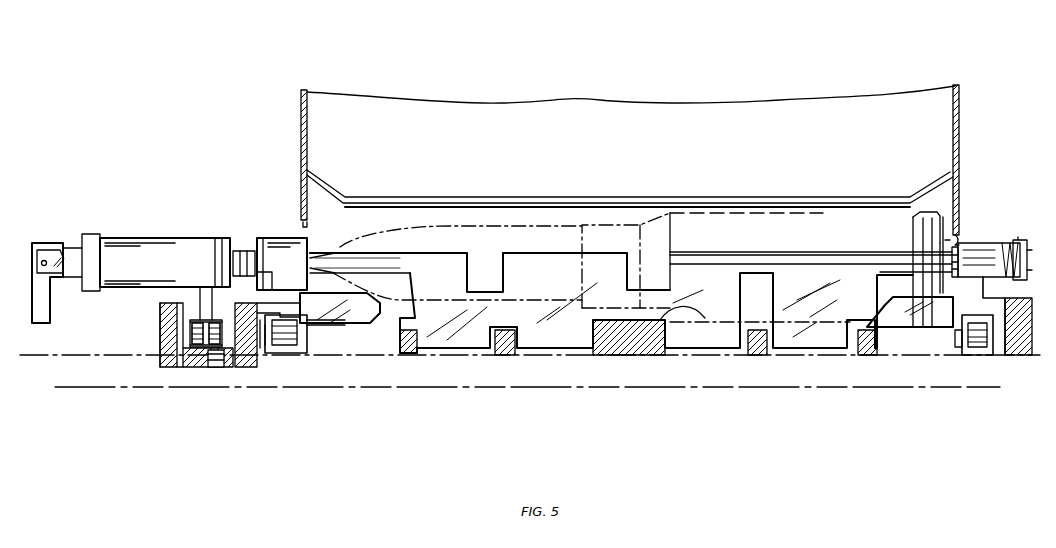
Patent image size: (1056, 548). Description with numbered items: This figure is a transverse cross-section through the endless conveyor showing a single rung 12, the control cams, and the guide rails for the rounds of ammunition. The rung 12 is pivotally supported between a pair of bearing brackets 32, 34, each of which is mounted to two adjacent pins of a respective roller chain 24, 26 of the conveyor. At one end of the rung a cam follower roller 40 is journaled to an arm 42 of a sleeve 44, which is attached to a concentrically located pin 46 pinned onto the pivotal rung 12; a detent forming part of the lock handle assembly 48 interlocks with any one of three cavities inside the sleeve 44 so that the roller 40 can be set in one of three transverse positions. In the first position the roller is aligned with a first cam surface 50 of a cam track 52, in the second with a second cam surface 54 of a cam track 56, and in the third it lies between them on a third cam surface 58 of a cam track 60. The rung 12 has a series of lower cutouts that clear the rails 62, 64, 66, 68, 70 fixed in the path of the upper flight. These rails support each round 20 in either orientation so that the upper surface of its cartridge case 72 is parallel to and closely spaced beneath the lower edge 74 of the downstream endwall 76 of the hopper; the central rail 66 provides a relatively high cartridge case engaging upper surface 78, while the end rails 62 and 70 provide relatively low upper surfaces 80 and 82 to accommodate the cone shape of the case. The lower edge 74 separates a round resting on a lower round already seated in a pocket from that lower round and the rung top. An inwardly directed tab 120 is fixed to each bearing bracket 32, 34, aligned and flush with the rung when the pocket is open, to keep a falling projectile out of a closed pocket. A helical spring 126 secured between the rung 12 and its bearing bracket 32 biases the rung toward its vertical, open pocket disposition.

The rung 12 is at (560, 253).
The round of ammunition 20 is at (530, 227).
The roller chain 24 is at (283, 345).
The roller chain 26 is at (980, 347).
The bearing bracket 32 is at (312, 253).
The bearing bracket 34 is at (970, 275).
The cam follower roller 40 is at (200, 348).
The arm 42 is at (190, 325).
The sleeve 44 is at (140, 240).
The pin 46 is at (244, 260).
The lock handle assembly 48 is at (48, 242).
The first cam surface 50 is at (160, 303).
The cam track 52 is at (160, 328).
The second cam surface 54 is at (265, 258).
The cam track 56 is at (212, 262).
The third cam surface 58 is at (213, 350).
The cam track 60 is at (225, 335).
The rail 62 is at (402, 353).
The rail 64 is at (500, 355).
The central rail 66 is at (615, 355).
The rail 68 is at (755, 355).
The rail 70 is at (867, 355).
The cartridge case 72 is at (720, 211).
The lower edge 74 is at (512, 205).
The downstream endwall 76 is at (842, 133).
The upper surface 78 is at (693, 320).
The upper surface 80 is at (407, 330).
The upper surface 82 is at (862, 290).
The tab 120 is at (333, 320).
The helical spring 126 is at (1012, 240).